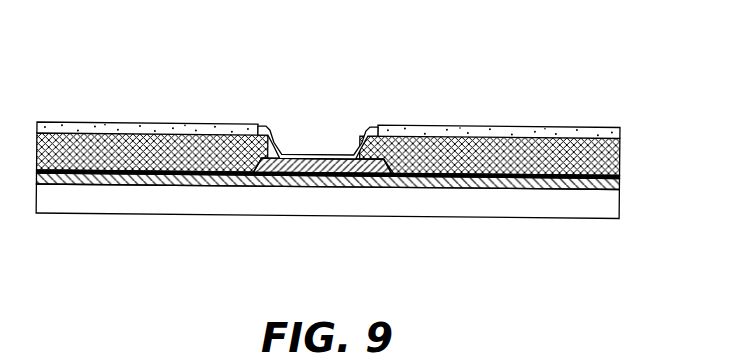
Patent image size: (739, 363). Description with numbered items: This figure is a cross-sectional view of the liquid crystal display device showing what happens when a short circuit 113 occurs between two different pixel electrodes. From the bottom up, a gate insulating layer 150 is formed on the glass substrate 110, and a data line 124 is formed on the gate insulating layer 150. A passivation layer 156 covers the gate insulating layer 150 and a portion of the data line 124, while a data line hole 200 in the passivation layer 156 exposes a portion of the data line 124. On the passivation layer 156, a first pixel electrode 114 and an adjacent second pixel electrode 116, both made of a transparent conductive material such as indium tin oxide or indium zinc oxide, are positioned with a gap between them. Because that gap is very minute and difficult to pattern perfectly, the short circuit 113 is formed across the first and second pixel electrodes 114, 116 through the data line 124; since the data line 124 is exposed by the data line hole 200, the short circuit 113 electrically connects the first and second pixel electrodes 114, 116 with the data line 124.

The glass substrate 110 is at (411, 207).
The gate insulating layer 150 is at (488, 186).
The passivation layer 156 is at (191, 174).
The first pixel electrode 114 is at (195, 126).
The second pixel electrode 116 is at (513, 128).
The data line 124 is at (325, 168).
The short circuit 113 is at (275, 126).
The data line hole 200 is at (327, 120).